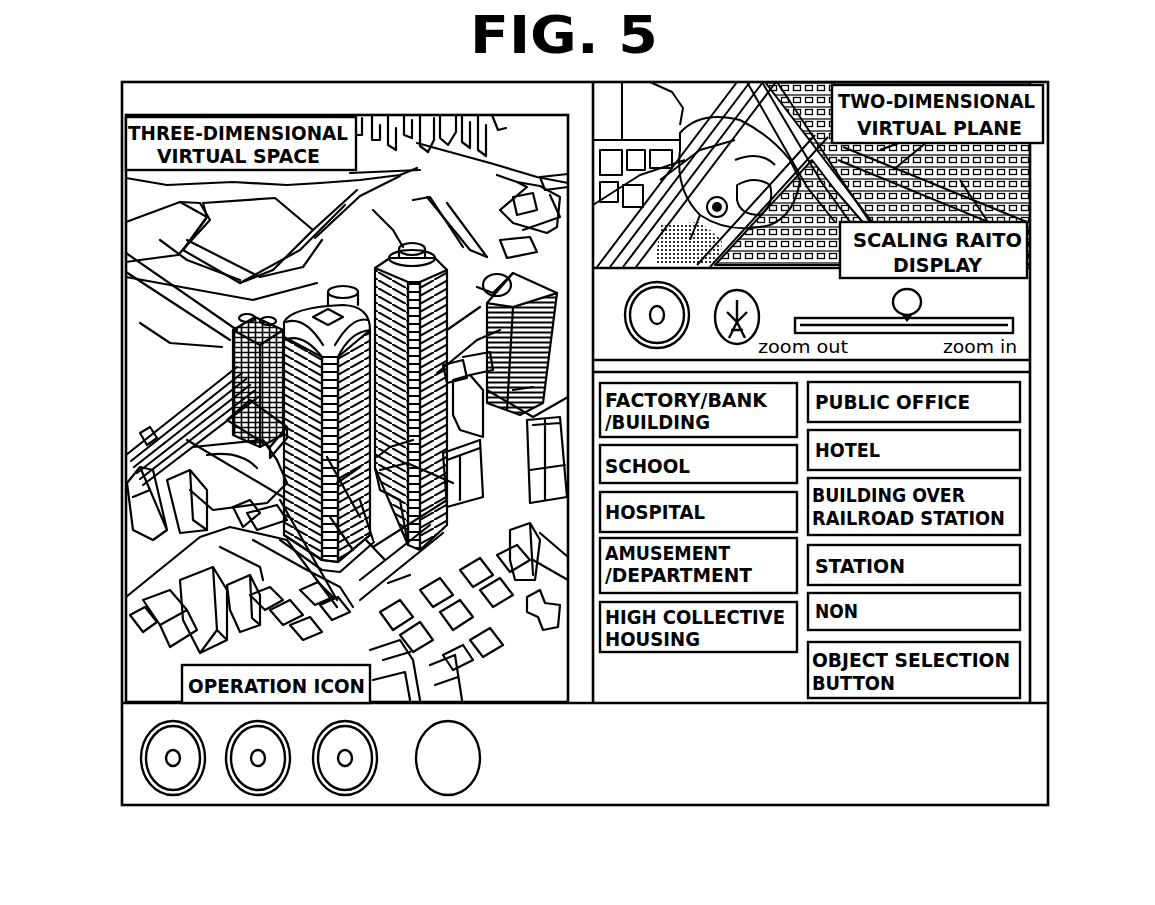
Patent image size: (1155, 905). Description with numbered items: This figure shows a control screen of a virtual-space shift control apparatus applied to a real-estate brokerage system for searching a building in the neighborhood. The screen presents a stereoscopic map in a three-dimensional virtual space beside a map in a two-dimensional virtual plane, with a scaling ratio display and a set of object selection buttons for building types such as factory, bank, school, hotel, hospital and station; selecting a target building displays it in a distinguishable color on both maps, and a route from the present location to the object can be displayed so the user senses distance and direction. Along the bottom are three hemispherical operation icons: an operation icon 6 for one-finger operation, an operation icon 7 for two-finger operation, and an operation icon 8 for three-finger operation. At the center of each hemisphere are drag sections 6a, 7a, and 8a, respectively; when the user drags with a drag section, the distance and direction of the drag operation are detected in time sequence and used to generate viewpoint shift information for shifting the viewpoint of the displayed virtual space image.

The operation icon 6 is at (171, 781).
The drag section 6a is at (165, 758).
The operation icon 7 is at (270, 776).
The drag section 7a is at (252, 766).
The operation icon 8 is at (361, 769).
The drag section 8a is at (345, 768).